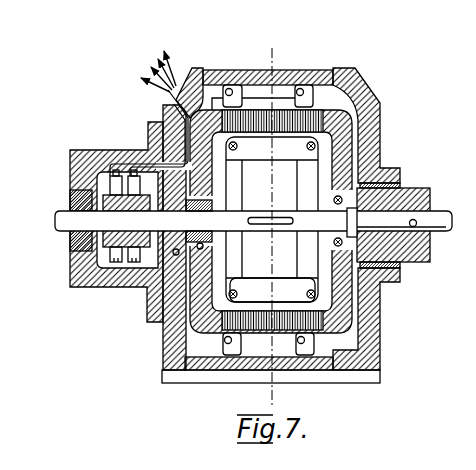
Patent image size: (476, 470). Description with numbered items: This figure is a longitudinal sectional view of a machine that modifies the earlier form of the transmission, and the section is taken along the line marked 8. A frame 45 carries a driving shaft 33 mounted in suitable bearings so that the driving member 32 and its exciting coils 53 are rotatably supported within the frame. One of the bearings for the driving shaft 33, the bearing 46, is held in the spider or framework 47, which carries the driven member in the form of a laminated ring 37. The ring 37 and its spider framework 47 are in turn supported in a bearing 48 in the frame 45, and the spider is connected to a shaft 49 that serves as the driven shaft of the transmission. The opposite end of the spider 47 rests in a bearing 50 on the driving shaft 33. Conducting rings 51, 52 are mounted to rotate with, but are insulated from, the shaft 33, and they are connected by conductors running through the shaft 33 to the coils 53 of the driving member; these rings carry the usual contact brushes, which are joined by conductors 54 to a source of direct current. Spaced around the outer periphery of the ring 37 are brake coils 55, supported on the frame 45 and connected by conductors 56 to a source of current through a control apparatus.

The section line 8- 8 is at (276, 47).
The rotor 32 is at (277, 219).
The driving shaft 33 is at (63, 233).
The laminated ring 37 is at (268, 124).
The frame 45 is at (376, 331).
The bearing 46 is at (335, 240).
The spider 47 is at (328, 176).
The bearing 48 is at (400, 186).
The driven shaft 49 is at (442, 218).
The bearing 50 is at (204, 240).
The conducting ring 51 is at (112, 263).
The conducting ring 52 is at (135, 263).
The exciting coils 53 is at (239, 292).
The conductors 54 is at (143, 72).
The brake coils 55 is at (310, 102).
The conductors 56 is at (157, 48).